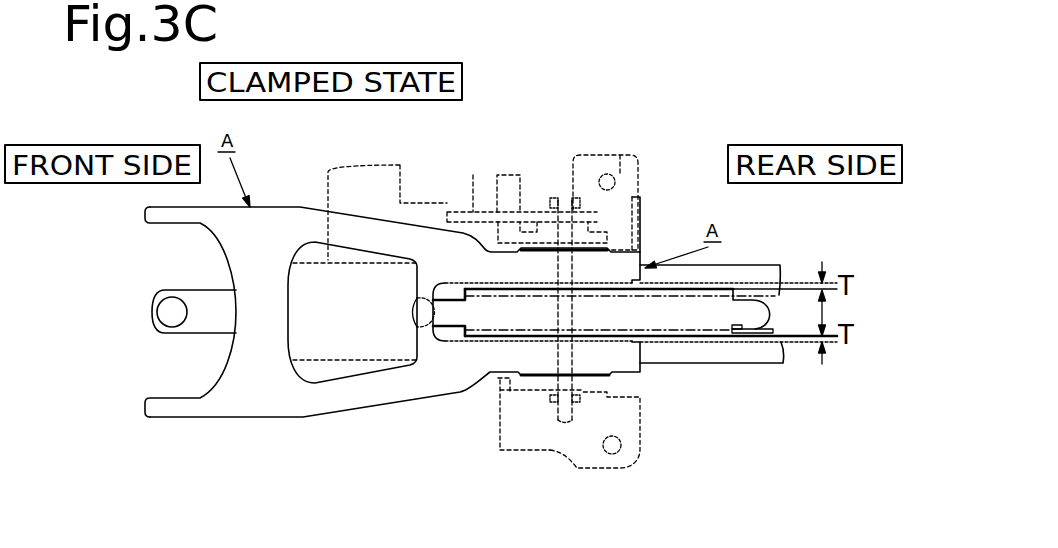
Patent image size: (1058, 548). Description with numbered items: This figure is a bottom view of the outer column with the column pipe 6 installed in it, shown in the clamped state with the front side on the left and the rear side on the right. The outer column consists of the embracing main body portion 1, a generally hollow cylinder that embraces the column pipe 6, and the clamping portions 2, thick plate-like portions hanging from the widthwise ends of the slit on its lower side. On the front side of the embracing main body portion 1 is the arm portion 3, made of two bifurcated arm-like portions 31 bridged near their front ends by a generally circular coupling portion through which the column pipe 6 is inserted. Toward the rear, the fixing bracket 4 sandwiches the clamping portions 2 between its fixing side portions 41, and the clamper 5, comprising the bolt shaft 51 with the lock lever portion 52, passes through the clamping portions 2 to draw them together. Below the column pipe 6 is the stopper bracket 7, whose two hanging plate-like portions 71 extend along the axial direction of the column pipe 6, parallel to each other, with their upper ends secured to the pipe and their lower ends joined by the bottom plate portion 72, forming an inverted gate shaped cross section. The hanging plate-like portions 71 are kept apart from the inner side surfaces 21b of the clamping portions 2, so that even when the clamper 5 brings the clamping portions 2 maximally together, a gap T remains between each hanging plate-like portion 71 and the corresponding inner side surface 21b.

The embracing main body portion 1 is at (650, 240).
The clamping portion 2 is at (612, 236).
The arm portion 3 is at (379, 210).
The fixing bracket 4 is at (650, 202).
The clamper 5 is at (548, 186).
The column pipe 6 is at (322, 357).
The stopper bracket 7 is at (758, 350).
The inner side surface 21b is at (532, 281).
The arm-like portion 31 is at (310, 222).
The fixing side portion 41 is at (520, 178).
The bolt shaft 51 is at (560, 306).
The lock lever portion 52 is at (473, 210).
The hanging plate-like portion 71 is at (713, 290).
The bottom plate portion 72 is at (678, 318).